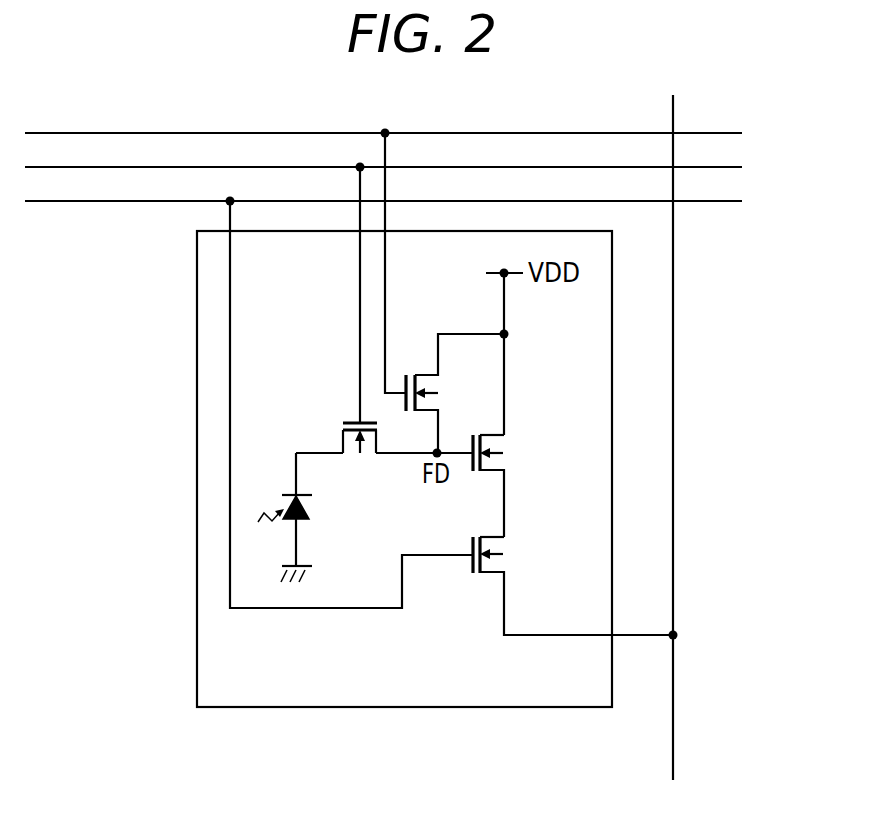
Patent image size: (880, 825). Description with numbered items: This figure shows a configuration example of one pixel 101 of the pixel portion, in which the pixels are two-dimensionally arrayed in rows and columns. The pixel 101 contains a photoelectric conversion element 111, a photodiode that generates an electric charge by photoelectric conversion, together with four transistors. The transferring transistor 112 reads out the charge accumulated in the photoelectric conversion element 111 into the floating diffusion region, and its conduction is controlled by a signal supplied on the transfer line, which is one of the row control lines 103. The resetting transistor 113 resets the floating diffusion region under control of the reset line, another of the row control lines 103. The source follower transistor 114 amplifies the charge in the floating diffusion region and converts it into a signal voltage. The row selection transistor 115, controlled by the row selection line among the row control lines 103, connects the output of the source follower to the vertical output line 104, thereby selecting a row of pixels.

The pixel 101 is at (197, 557).
The row control lines 103 is at (762, 122).
The vertical output line 104 is at (675, 695).
The photoelectric conversion element 111 is at (313, 510).
The transferring transistor 112 is at (343, 423).
The resetting transistor 113 is at (413, 372).
The source follower transistor 114 is at (503, 443).
The row selection transistor 115 is at (503, 547).